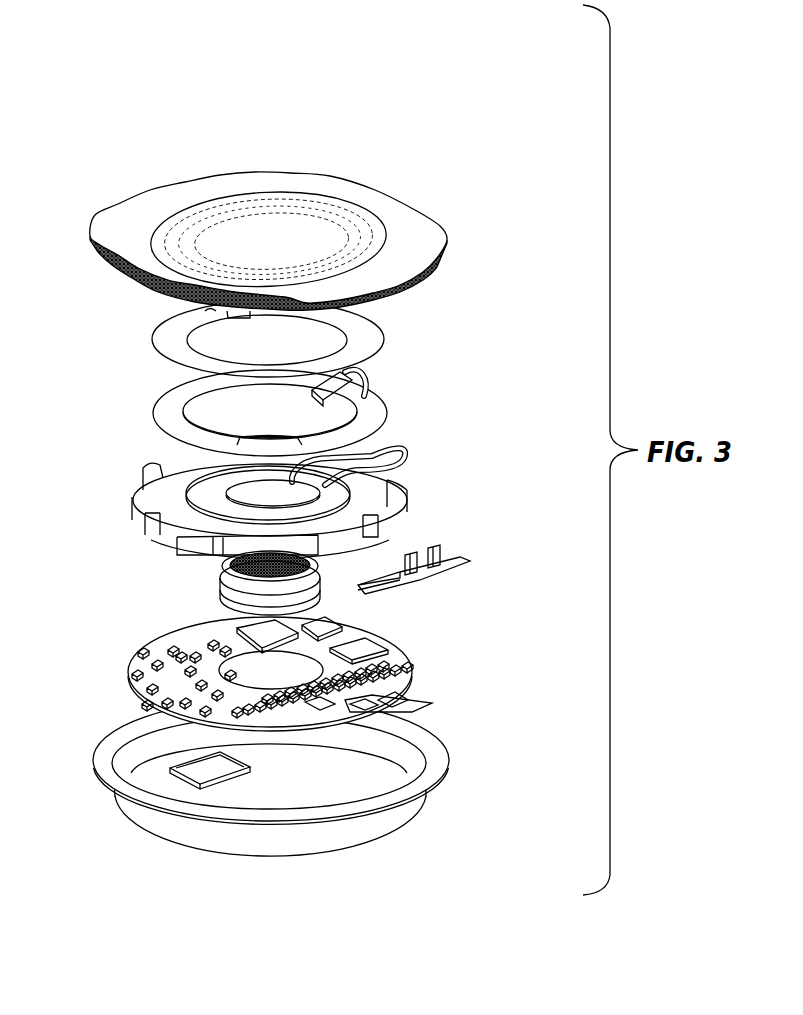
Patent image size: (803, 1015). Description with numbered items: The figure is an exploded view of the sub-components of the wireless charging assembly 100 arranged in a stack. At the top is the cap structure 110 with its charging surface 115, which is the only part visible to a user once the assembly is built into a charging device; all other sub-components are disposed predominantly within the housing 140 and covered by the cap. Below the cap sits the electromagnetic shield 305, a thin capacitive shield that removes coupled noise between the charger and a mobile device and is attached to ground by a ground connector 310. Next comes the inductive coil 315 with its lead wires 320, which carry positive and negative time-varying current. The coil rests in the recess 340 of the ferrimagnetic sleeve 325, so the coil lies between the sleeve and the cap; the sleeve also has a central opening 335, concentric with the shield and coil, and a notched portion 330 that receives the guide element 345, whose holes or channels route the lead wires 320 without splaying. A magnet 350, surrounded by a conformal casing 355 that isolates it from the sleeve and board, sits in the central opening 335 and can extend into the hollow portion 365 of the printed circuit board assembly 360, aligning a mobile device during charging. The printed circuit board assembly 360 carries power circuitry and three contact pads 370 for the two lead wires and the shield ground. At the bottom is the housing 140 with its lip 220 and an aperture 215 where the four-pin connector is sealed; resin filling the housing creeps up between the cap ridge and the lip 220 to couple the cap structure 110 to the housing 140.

The wireless charging assembly 100 is at (392, 44).
The cap structure 110 is at (415, 258).
The charging surface 115 is at (287, 222).
The housing 140 is at (327, 840).
The aperture 215 is at (200, 772).
The lip 220 is at (445, 758).
The electromagnetic shield 305 is at (377, 330).
The ground connector 310 is at (363, 377).
The inductive coil 315 is at (387, 413).
The lead wires 320 is at (397, 445).
The ferrimagnetic sleeve 325 is at (403, 480).
The notched portion 330 is at (347, 538).
The central opening 335 is at (260, 502).
The recess 340 is at (178, 502).
The guide element 345 is at (470, 557).
The magnet 350 is at (230, 565).
The casing 355 is at (217, 578).
The printed circuit board assembly 360 is at (387, 637).
The hollow portion 365 is at (247, 672).
The contact pads 370 is at (410, 707).